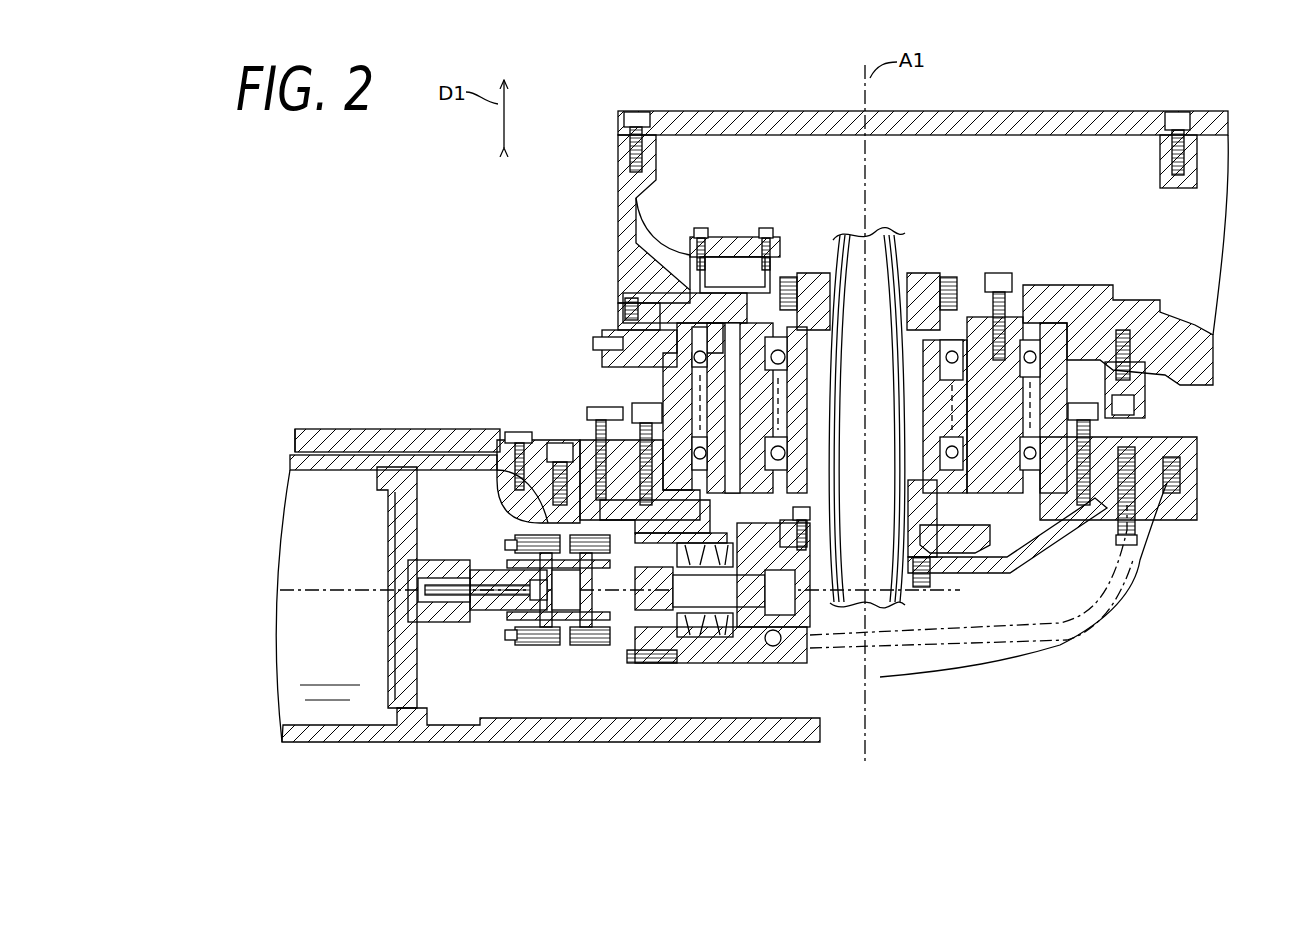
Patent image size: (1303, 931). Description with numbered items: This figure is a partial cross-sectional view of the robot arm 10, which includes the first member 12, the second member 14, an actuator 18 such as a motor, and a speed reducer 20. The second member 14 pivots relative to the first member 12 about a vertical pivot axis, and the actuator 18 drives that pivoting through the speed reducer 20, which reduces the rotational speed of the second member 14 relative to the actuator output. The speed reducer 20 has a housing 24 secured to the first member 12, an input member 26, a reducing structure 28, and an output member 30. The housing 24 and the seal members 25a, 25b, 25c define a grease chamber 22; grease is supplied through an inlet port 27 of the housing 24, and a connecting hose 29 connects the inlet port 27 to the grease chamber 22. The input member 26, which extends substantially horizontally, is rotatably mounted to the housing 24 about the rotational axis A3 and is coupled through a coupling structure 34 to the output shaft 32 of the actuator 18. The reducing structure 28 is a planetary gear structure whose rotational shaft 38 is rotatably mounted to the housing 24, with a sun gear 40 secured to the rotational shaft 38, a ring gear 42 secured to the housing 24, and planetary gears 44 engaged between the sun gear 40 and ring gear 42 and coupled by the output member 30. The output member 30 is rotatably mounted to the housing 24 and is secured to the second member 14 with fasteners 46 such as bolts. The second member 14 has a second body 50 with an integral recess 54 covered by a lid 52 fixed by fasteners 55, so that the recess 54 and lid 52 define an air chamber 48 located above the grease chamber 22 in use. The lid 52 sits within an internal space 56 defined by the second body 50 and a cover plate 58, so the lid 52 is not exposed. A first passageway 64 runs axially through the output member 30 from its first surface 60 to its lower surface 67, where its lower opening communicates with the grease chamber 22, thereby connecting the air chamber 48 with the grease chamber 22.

The robot arm 10 is at (468, 244).
The first member 12 is at (410, 425).
The second member 14 is at (622, 108).
The actuator 18 is at (275, 540).
The speed reducer 20 is at (662, 397).
The grease chamber 22 is at (1007, 528).
The housing 24 is at (552, 432).
The seal member 25a is at (822, 272).
The seal member 25b is at (1035, 325).
The seal member 25c is at (615, 650).
The input member 26 is at (705, 640).
The inlet port 27 is at (1140, 516).
The reducing structure 28 is at (1256, 384).
The connecting hose 29 is at (1120, 585).
The output member 30 is at (705, 350).
The output shaft 32 is at (475, 614).
The coupling structure 34 is at (552, 648).
The rotational shaft 38 is at (1165, 460).
The sun gear 40 is at (1128, 392).
The ring gear 42 is at (1105, 405).
The planetary gears 44 is at (1085, 418).
The fasteners 46 is at (1000, 275).
The air chamber 48 is at (757, 255).
The second body 50 is at (625, 210).
The lid 52 is at (737, 258).
The recess 54 is at (712, 232).
The fasteners 55 is at (766, 228).
The internal space 56 is at (793, 153).
The cover plate 58 is at (945, 125).
The first surface 60 is at (637, 300).
The first passageway 64 is at (614, 308).
The lower surface 67 is at (757, 522).
The rotational axis A3 is at (652, 640).